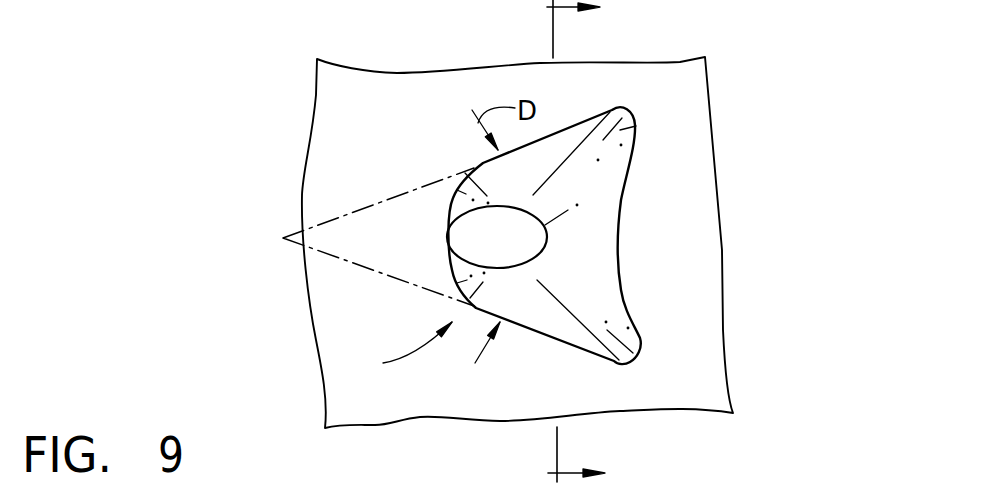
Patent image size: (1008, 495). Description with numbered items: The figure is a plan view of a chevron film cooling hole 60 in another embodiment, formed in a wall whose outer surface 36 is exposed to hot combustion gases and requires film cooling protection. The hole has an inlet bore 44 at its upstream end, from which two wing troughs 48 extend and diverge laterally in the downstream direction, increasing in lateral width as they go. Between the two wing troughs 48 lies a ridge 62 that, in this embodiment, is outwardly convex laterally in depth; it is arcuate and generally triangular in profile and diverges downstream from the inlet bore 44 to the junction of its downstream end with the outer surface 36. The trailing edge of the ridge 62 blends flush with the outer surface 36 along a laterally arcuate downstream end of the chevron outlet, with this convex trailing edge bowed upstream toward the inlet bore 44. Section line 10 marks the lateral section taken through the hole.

The section line 10- 10 is at (600, 247).
The outer surface 36 is at (698, 257).
The inlet bore 44 is at (511, 253).
The wing troughs 48 is at (587, 160).
The chevron film cooling hole 60 is at (462, 246).
The ridge 62 is at (606, 252).